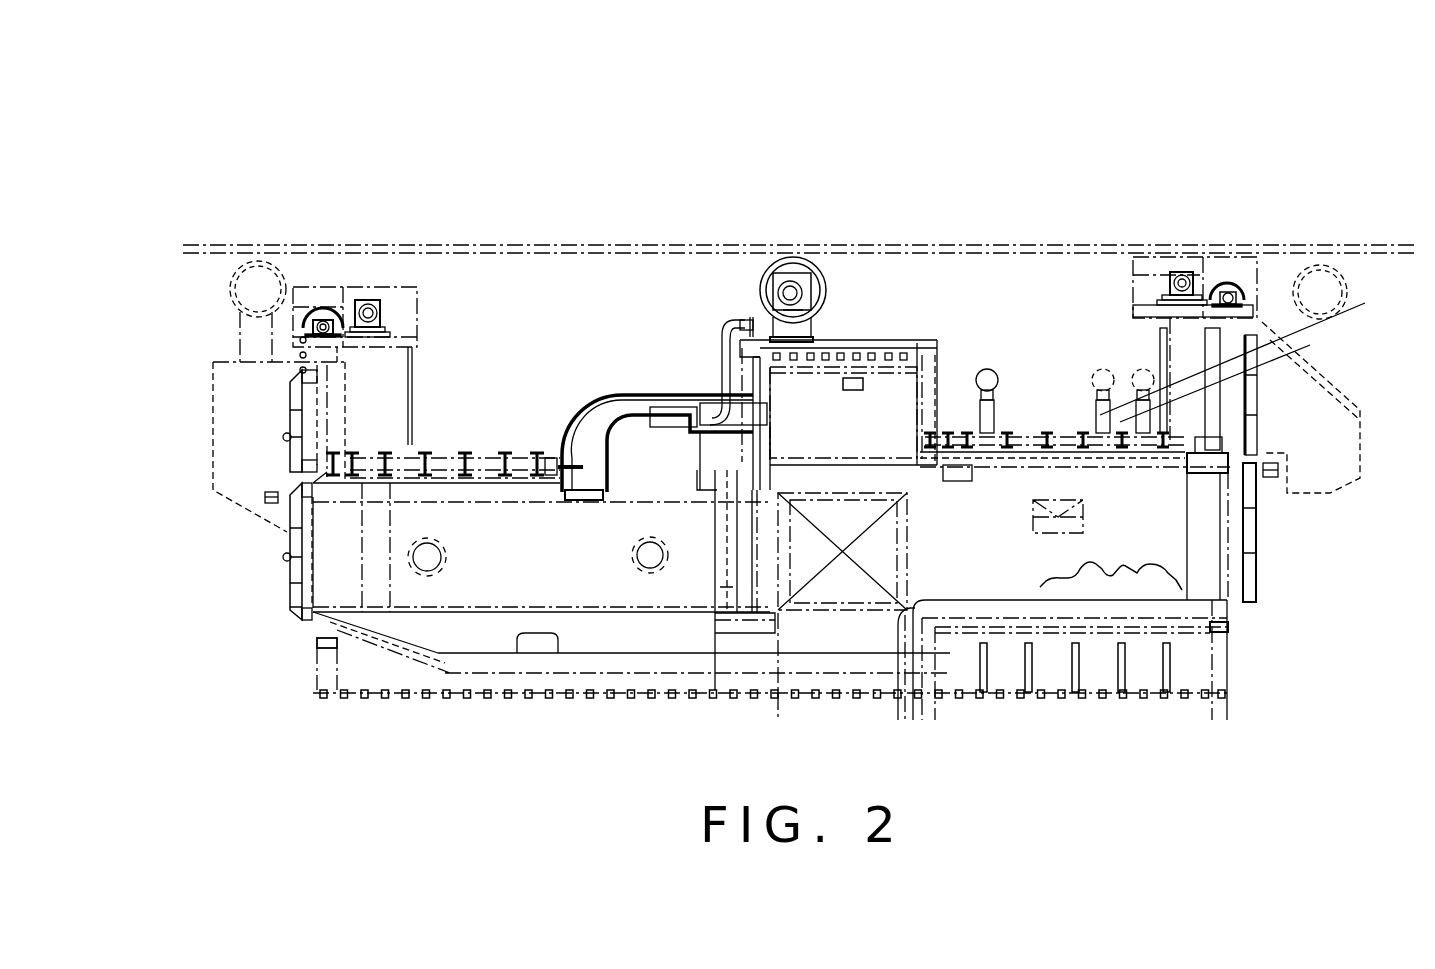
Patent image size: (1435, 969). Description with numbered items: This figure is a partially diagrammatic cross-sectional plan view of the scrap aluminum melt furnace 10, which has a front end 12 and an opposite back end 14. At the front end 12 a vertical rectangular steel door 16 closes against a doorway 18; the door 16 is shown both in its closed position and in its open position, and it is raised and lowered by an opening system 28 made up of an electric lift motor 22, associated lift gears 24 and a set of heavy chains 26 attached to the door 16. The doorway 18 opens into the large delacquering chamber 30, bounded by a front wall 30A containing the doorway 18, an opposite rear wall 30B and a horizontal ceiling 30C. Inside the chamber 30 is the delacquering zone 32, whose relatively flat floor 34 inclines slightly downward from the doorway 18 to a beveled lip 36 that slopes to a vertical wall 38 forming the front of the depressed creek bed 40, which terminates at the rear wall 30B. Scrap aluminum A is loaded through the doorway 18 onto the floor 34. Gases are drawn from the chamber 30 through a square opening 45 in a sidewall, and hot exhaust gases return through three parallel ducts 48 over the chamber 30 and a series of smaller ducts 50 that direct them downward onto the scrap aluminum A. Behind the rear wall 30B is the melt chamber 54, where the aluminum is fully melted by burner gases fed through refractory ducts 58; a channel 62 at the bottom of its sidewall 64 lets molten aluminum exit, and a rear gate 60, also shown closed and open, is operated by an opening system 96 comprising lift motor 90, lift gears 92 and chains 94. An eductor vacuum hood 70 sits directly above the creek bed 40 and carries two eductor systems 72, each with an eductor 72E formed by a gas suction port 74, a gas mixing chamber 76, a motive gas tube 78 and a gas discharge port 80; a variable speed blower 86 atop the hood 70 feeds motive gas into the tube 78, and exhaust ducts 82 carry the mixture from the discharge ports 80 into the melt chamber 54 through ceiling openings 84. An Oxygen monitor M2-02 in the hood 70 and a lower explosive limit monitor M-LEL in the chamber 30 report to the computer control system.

The furnace 10 is at (868, 180).
The front end 12 is at (1116, 192).
The back end 14 is at (400, 210).
The door 16 is at (1257, 393).
The doorway 18 is at (1243, 616).
The electric lift motor 22 is at (1182, 272).
The lift gears 24 is at (1232, 292).
The chains 26 is at (1322, 265).
The opening system 28 is at (1252, 205).
The delacquering chamber 30 is at (1015, 478).
The front wall 30A is at (1210, 583).
The rear wall 30B is at (793, 633).
The ceiling 30C is at (1070, 430).
The delacquering zone 32 is at (1046, 574).
The floor 34 is at (1030, 600).
The beveled lip 36 is at (918, 630).
The vertical wall 38 is at (893, 637).
The creek bed 40 is at (834, 640).
The square opening 45 is at (1053, 500).
The cylindrical steel ducts 48 is at (982, 368).
The smaller cylindrical steel ducts 50 is at (982, 415).
The melt chamber 54 is at (512, 598).
The cylindrical refractory ducts 58 is at (432, 543).
The rear gate 60 is at (292, 420).
The channel 62 is at (548, 645).
The sidewall 64 is at (597, 578).
The eductor vacuum hood 70 is at (865, 398).
The eductor systems 72 is at (748, 262).
The eductor 72E is at (677, 312).
The gas suction port 74 is at (752, 412).
The gas mixing chamber 76 is at (690, 410).
The motive gas tube 78 is at (720, 340).
The gas discharge port 80 is at (683, 413).
The exhaust ducts 82 is at (592, 398).
The circular openings 84 is at (574, 515).
The variable speed blower 86 is at (820, 270).
The electric lift motor 90 is at (382, 300).
The lift gears 92 is at (318, 318).
The chains 94 is at (290, 346).
The opening system 96 is at (330, 290).
The scrap aluminum A is at (1142, 553).
The Oxygen monitor M2-02 is at (855, 375).
The lower explosive limit monitor M-LEL is at (1007, 528).